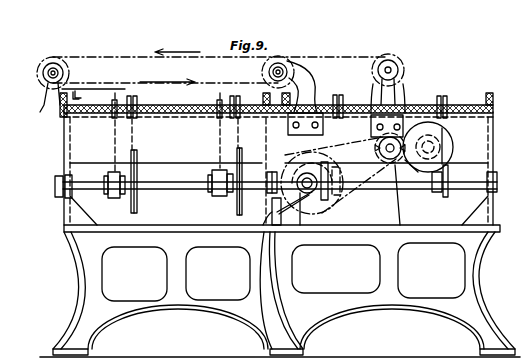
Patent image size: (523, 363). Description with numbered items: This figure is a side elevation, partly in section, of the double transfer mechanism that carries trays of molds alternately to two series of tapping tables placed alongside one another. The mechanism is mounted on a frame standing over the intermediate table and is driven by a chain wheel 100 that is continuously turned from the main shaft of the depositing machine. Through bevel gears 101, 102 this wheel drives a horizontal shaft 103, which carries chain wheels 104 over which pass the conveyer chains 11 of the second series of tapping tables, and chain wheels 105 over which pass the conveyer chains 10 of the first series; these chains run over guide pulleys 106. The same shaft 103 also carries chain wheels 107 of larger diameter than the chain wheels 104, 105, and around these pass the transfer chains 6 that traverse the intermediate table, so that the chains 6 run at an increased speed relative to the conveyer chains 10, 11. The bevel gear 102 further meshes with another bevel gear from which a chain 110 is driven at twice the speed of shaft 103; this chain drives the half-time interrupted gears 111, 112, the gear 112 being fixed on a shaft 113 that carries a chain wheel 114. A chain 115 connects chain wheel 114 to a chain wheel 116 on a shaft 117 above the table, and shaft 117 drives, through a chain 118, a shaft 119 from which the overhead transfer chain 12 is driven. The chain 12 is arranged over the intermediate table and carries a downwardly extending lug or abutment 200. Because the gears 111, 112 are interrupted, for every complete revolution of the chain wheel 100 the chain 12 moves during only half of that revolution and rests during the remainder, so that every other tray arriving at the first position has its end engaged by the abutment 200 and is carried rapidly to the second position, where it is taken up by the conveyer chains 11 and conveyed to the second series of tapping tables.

The transfer chain 12 is at (100, 58).
The lug or abutment 200 is at (79, 95).
The guide pulleys 106 is at (132, 100).
The shaft 119 is at (266, 66).
The chain 118 is at (322, 55).
The conveyer chains 11 is at (324, 124).
The chain wheel 116 is at (390, 56).
The shaft 117 is at (399, 69).
The chain 115 is at (405, 92).
The half-time interrupted gear 112 is at (379, 149).
The half-time interrupted gear 111 is at (449, 133).
The conveyer chains 10 is at (114, 140).
The transfer chains 6 is at (134, 135).
The shaft 103 is at (195, 191).
The chain wheels 105 is at (117, 199).
The chain wheels 107 is at (137, 212).
The chain wheels 104 is at (341, 172).
The chain wheel 100 is at (323, 212).
The bevel gear 102 is at (334, 200).
The bevel gear 101 is at (303, 229).
The chain wheel 114 is at (391, 162).
The shaft 113 is at (416, 171).
The chain 110 is at (403, 205).